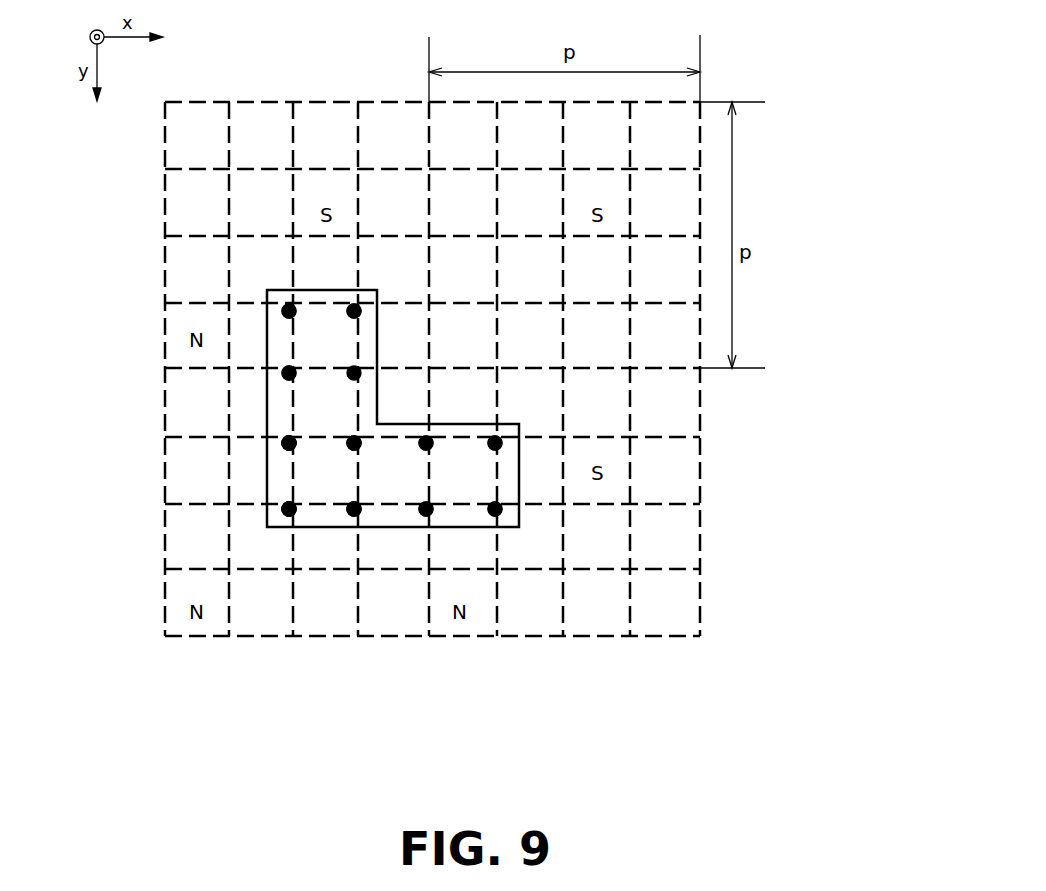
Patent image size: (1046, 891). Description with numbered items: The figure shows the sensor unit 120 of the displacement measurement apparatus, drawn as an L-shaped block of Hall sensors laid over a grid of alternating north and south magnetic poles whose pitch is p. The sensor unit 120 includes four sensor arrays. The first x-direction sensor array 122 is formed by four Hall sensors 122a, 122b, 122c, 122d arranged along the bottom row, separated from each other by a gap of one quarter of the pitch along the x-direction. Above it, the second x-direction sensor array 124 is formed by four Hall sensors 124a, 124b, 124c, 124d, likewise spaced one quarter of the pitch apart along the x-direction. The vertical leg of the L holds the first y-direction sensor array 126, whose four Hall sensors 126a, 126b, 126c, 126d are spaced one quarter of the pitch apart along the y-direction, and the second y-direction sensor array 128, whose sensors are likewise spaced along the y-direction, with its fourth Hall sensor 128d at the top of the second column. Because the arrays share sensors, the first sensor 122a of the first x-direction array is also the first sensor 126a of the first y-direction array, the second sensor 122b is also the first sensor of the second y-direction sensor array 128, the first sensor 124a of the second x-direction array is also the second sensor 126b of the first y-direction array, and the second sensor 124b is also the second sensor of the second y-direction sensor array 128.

The sensor unit 120 is at (313, 36).
The 1-1 sensor array 122 is at (535, 496).
The 1-2 sensor array 124 is at (535, 443).
The 2-1 sensor array 126 is at (305, 275).
The 2-2 sensor array 128 is at (373, 275).
The Hall sensor 122a is at (289, 509).
The Hall sensor 122b is at (354, 509).
The Hall sensor 122c is at (426, 509).
The Hall sensor 122d is at (495, 509).
The Hall sensor 124a is at (289, 443).
The Hall sensor 124b is at (354, 443).
The Hall sensor 124c is at (426, 443).
The Hall sensor 124d is at (495, 443).
The Hall sensor 126a is at (289, 509).
The Hall sensor 126b is at (289, 443).
The Hall sensor 126c is at (289, 373).
The Hall sensor 126d is at (289, 311).
The Hall sensor 128d is at (354, 311).